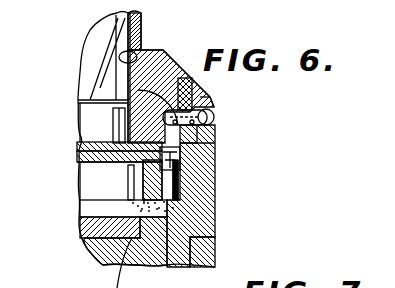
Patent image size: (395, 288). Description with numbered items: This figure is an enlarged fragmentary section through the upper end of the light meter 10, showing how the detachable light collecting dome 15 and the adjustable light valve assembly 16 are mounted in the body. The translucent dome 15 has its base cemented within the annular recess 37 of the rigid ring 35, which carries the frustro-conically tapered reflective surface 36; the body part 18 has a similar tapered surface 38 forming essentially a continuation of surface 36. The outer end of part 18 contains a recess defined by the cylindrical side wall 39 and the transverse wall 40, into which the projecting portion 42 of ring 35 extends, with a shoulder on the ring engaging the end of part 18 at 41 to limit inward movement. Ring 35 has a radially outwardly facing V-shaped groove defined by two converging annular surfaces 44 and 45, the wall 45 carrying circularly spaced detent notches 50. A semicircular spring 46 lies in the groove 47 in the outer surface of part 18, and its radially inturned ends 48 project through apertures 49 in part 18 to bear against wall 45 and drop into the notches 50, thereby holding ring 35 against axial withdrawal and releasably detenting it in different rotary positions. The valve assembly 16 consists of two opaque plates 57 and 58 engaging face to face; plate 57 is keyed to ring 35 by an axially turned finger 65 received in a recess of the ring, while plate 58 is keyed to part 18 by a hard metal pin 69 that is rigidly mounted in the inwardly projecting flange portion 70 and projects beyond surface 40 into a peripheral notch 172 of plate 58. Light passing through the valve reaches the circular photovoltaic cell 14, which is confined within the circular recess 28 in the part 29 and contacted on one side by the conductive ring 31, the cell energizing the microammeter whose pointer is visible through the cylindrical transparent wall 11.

The light meter 10 is at (283, 131).
The cylindrical transparent wall 11 is at (216, 250).
The circular photovoltaic cell 14 is at (92, 228).
The incident light collecting dome 15 is at (142, 17).
The adjustable light valve assembly 16 is at (78, 146).
The part (body element) 18 is at (200, 225).
The circular recess 28 is at (124, 263).
The part 29 is at (93, 257).
The conductive ring 31 is at (165, 215).
The rigid ring 35 is at (155, 70).
The reflective surface 36 is at (165, 80).
The annular recess 37 is at (137, 55).
The frustro-conically tapered surface 38 is at (216, 105).
The cylindrical side wall 39 is at (198, 77).
The transverse wall 40 is at (182, 156).
The shoulder 41 is at (189, 87).
The projecting portion 42 is at (113, 112).
The annular surface 44 is at (140, 88).
The axially inner wall 45 is at (111, 181).
The spring 46 is at (225, 120).
The semi-circular groove 47 is at (212, 112).
The retaining and detenting lugs 48 is at (206, 98).
The apertures 49 is at (216, 133).
The detent notches 50 is at (133, 189).
The valve plate 57 is at (80, 155).
The valve plate 58 is at (80, 163).
The axially turned finger 65 is at (113, 118).
The cylindrical pin 69 is at (170, 188).
The inwardly projecting flange portion 70 is at (93, 212).
The peripheral notch 172 is at (212, 150).